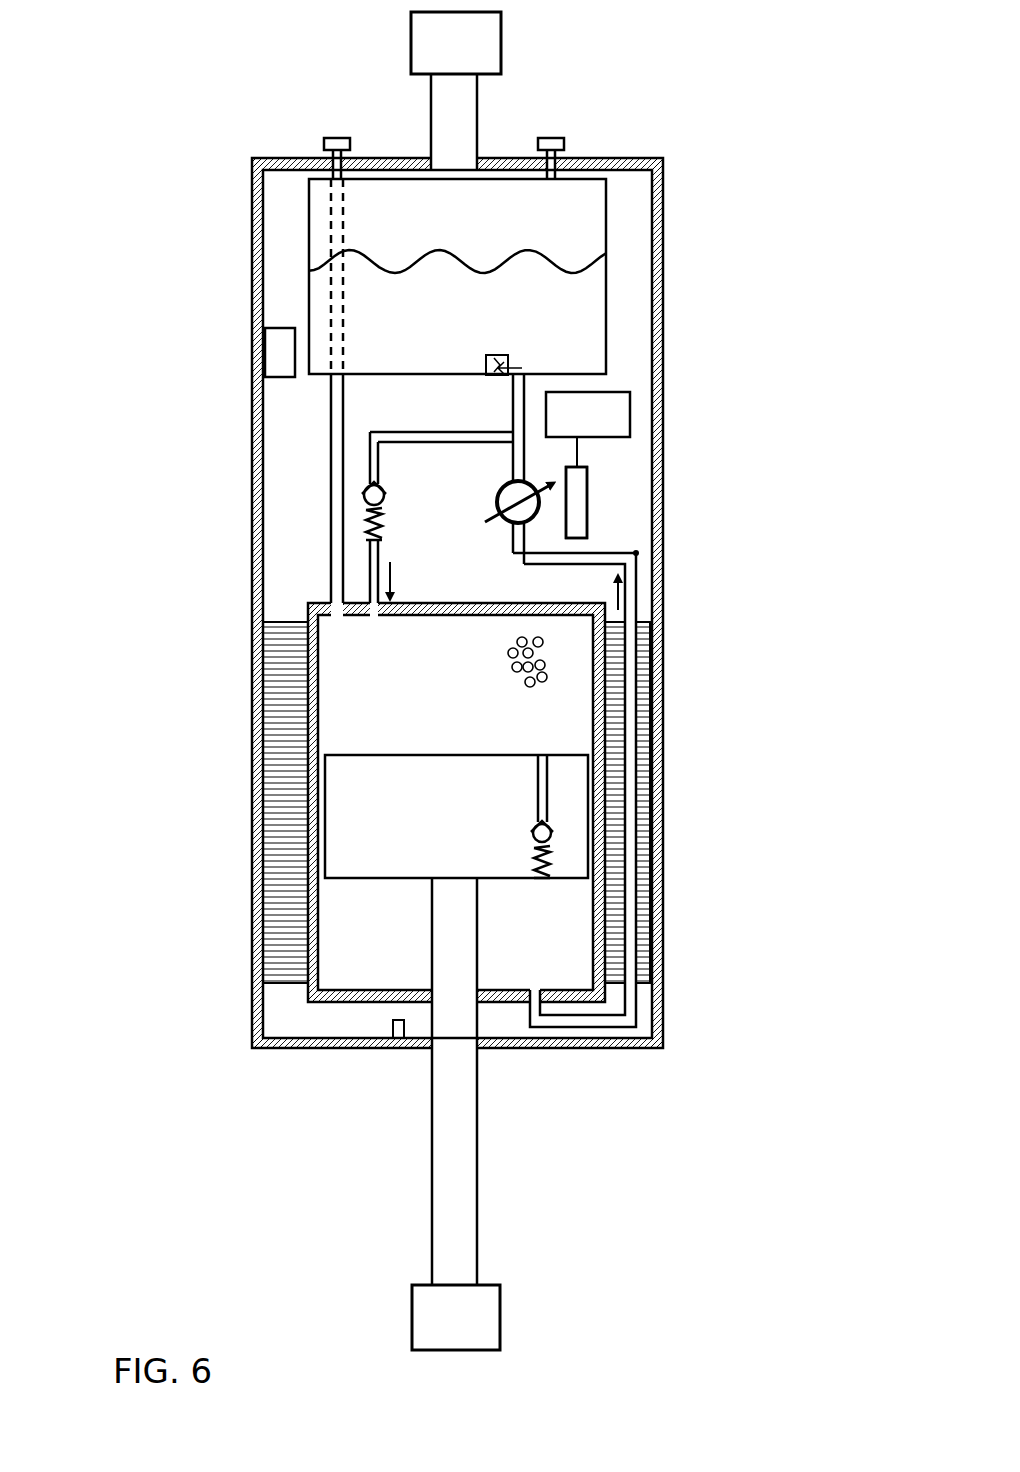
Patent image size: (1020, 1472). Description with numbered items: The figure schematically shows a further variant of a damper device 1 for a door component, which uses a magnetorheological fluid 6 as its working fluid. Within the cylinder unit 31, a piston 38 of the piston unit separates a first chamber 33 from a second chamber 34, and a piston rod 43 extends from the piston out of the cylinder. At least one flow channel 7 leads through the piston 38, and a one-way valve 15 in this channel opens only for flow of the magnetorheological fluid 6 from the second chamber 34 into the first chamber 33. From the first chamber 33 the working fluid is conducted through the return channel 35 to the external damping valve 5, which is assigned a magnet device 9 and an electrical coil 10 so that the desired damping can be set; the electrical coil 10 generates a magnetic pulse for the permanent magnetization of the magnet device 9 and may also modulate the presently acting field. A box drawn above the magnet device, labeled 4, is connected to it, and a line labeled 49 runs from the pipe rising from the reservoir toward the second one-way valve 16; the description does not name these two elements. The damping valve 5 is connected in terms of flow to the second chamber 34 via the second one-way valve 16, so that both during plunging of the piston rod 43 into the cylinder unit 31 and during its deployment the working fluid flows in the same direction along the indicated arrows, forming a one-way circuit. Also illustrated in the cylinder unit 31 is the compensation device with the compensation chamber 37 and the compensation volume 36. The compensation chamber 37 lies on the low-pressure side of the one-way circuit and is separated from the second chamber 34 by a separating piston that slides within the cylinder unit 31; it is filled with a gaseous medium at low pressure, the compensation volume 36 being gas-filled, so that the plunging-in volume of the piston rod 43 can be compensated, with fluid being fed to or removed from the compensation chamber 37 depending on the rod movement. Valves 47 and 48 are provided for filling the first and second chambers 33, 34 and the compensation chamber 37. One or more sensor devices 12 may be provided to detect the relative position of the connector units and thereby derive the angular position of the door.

The damper device 1 is at (142, 130).
The control unit 4 is at (610, 408).
The damping valve 5 is at (562, 497).
The magnetorheological fluid 6 is at (510, 657).
The flow channel 7 is at (538, 790).
The magnet device 9 is at (583, 503).
The electrical coil 10 is at (582, 523).
The sensor device 12 is at (275, 353).
The one-way valve 15 is at (533, 838).
The second one-way valve 16 is at (363, 499).
The cylinder unit 31 is at (304, 614).
The first chamber 33 is at (345, 943).
The second chamber 34 is at (330, 721).
The return channel 35 is at (628, 945).
The compensation volume 36 is at (593, 230).
The compensation chamber 37 is at (322, 197).
The piston 38 is at (355, 842).
The piston rod 43 is at (455, 1167).
The valve 47 is at (327, 138).
The valve 48 is at (543, 140).
The connecting line 49 is at (372, 432).